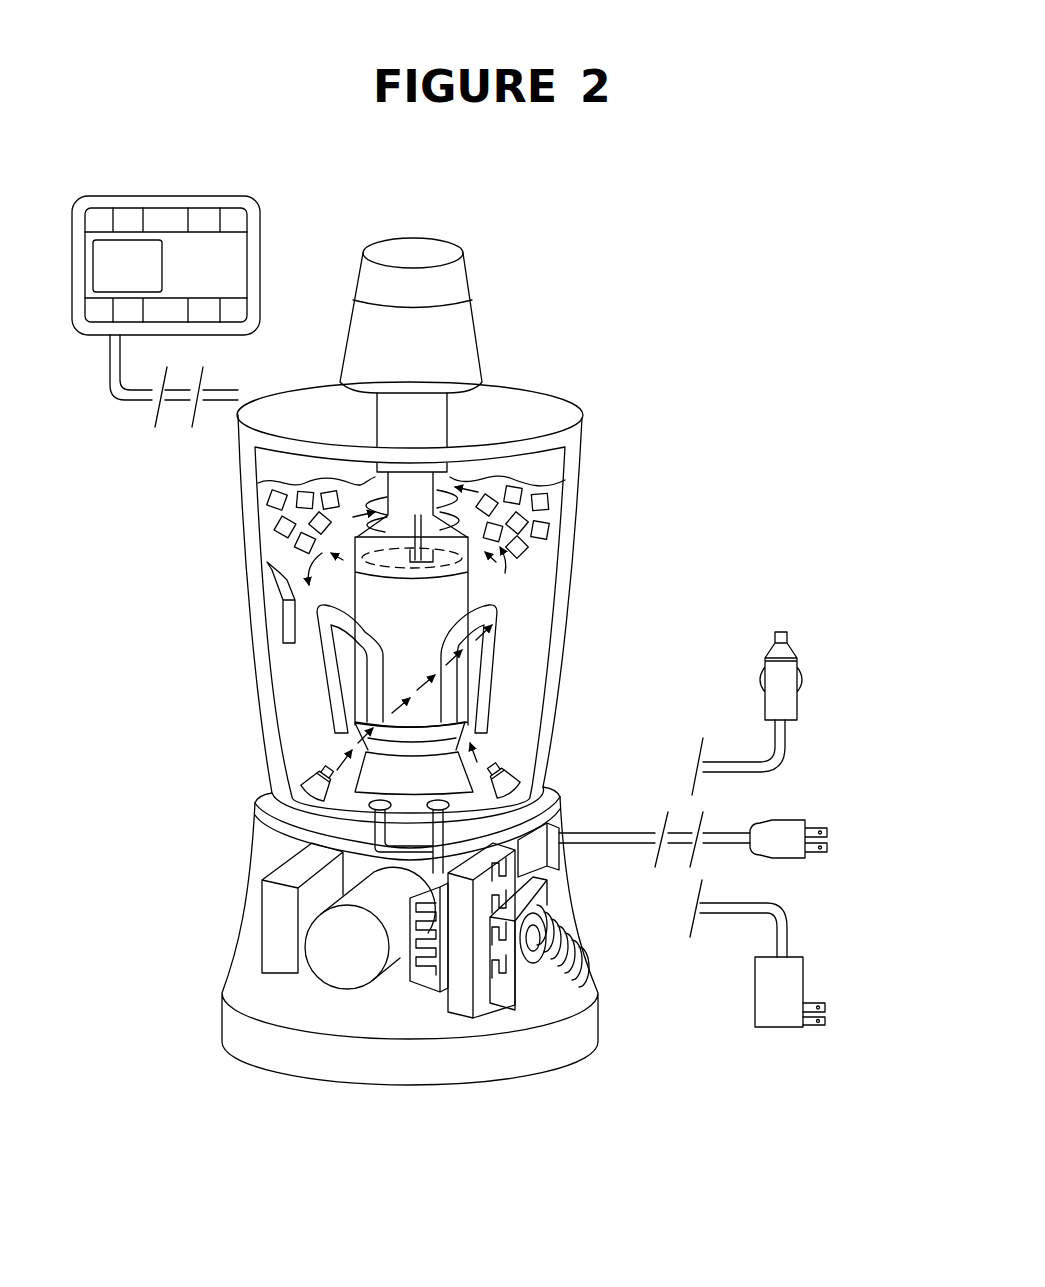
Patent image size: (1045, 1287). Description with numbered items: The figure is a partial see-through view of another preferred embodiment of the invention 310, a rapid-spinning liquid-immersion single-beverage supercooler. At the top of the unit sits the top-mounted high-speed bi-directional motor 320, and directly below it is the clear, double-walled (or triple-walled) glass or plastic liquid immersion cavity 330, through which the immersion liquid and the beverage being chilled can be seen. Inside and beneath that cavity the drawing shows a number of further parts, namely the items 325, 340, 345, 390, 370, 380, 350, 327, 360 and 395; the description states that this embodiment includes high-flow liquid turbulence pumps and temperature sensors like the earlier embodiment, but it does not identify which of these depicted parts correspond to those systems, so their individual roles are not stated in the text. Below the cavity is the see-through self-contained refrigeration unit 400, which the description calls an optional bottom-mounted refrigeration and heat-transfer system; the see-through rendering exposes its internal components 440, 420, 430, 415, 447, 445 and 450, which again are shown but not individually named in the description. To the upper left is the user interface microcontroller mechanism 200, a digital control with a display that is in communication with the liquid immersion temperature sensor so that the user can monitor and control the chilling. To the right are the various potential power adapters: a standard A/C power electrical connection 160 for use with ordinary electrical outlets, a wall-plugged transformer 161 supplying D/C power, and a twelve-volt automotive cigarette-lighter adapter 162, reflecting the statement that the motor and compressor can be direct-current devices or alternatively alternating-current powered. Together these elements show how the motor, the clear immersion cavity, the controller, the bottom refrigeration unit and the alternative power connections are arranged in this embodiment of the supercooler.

The user interface microcontroller mechanism 200 is at (252, 228).
The preferred embodiment of the invention 310 is at (603, 267).
The top-mounted high-speed bi-directional motor 320 is at (460, 323).
The neck / shaft housing 325 is at (433, 428).
The clear double-walled liquid immersion cavity 330 is at (248, 457).
The chamber 340 is at (308, 735).
The ice 345 is at (273, 500).
The vortex / stem ring 390 is at (447, 553).
The beverage can 370 is at (458, 580).
The temperature probe 380 is at (283, 608).
The can holder 350 is at (380, 672).
The lamps / flow arrows 327 is at (303, 562).
The platform 360 is at (500, 775).
The pegs 395 is at (446, 803).
The see-through self-contained refrigeration unit 400 is at (300, 858).
The control box 440 is at (272, 909).
The motor 420 is at (322, 953).
The heat sink 430 is at (425, 987).
The circuit board 415 is at (462, 1005).
The fan 447 is at (572, 950).
The coil 445 is at (530, 977).
The relay 450 is at (543, 852).
The standard A/C power electrical connection 160 is at (780, 850).
The 12V automotive cigarette-lighter adapter 162 is at (787, 703).
The wall-plugged transformer 161 is at (792, 983).